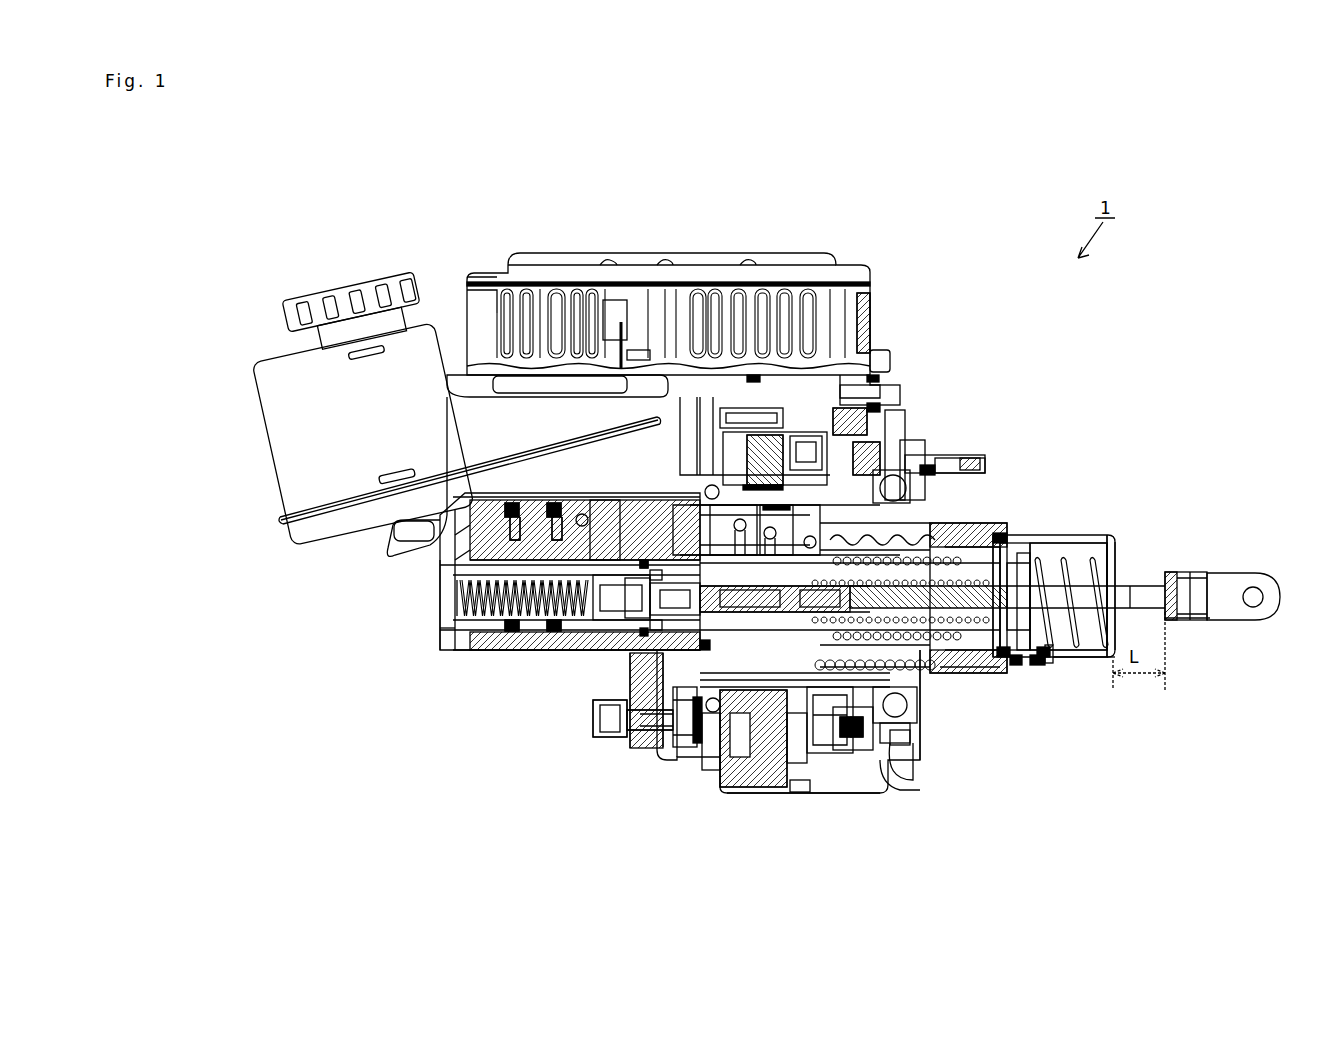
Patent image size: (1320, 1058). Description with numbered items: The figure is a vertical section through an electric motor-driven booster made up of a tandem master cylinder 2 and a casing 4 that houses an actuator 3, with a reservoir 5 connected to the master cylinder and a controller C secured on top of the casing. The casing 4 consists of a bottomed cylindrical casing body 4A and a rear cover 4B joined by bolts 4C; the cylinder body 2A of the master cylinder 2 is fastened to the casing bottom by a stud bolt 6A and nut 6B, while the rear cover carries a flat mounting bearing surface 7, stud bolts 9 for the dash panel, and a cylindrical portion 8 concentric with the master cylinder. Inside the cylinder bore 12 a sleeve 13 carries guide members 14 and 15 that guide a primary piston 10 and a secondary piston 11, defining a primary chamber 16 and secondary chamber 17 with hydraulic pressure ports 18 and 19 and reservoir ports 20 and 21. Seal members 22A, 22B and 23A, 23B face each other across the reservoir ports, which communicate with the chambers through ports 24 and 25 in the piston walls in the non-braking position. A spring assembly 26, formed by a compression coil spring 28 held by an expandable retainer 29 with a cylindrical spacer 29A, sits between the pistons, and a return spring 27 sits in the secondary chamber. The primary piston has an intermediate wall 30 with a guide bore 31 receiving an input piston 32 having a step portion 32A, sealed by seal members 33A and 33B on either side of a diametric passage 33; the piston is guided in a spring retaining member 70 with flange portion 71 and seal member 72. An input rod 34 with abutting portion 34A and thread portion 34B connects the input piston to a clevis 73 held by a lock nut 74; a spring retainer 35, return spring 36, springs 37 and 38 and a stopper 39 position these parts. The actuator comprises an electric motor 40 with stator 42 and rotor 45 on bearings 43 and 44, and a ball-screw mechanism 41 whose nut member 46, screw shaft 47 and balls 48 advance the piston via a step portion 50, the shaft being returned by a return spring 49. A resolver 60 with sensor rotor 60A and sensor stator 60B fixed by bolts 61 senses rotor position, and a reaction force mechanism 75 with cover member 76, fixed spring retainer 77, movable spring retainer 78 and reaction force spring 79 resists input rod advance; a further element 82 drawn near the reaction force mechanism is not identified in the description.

The tandem master cylinder 2 is at (426, 655).
The cylinder body 2A is at (460, 540).
The actuator 3 is at (915, 450).
The casing 4 is at (812, 814).
The casing body 4A is at (668, 762).
The rear cover 4B is at (900, 790).
The bolts 4C is at (880, 480).
The reservoir 5 is at (283, 378).
The stud bolt 6A is at (655, 735).
The nut 6B is at (615, 740).
The mounting bearing surface 7 is at (930, 460).
The cylindrical portion 8 is at (1045, 540).
The stud bolts 9 is at (920, 530).
The primary piston 10 is at (915, 695).
The secondary piston 11 is at (575, 645).
The cylinder bore 12 is at (465, 645).
The sleeve 13 is at (625, 650).
The guide member 14 is at (492, 640).
The guide member 15 is at (672, 725).
The primary chamber 16 is at (602, 645).
The secondary chamber 17 is at (457, 537).
The hydraulic pressure port 18 is at (508, 500).
The hydraulic pressure port 19 is at (461, 527).
The reservoir port 20 is at (606, 515).
The reservoir port 21 is at (452, 455).
The seal member 22A is at (645, 655).
The seal member 22B is at (715, 775).
The seal member 23A is at (515, 640).
The seal member 23B is at (550, 640).
The port 24 is at (628, 745).
The port 25 is at (450, 660).
The spring assembly 26 is at (552, 505).
The return spring 27 is at (440, 628).
The compression coil spring 28 is at (518, 525).
The retainer 29 is at (560, 530).
The cylindrical spacer 29A is at (708, 745).
The intermediate wall 30 is at (790, 782).
The guide bore 31 is at (918, 690).
The input piston 32 is at (920, 560).
The step portion 32A is at (852, 330).
The passage 33 is at (750, 290).
The seal member 33A is at (731, 300).
The seal member 33B is at (802, 300).
The input rod 34 is at (1145, 590).
The abutting portion 34A is at (1020, 540).
The thread portion 34B is at (1190, 575).
The spring retainer 35 is at (1040, 575).
The return spring 36 is at (958, 690).
The spring 37 is at (900, 450).
The spring 38 is at (1003, 535).
The stopper 39 is at (1012, 668).
The electric motor 40 is at (842, 770).
The ball-screw mechanism 41 is at (965, 465).
The stator 42 is at (755, 790).
The bearing 43 is at (705, 715).
The bearing 44 is at (908, 750).
The rotor 45 is at (870, 440).
The nut member 46 is at (908, 725).
The screw shaft 47 is at (975, 668).
The balls 48 is at (935, 465).
The return spring 49 is at (690, 560).
The step portion 50 is at (890, 600).
The resolver 60 is at (852, 840).
The sensor rotor 60A is at (850, 760).
The sensor stator 60B is at (870, 760).
The bolts 61 is at (882, 360).
The spring retaining member 70 is at (710, 430).
The flange portion 71 is at (642, 562).
The seal member 72 is at (770, 440).
The clevis 73 is at (1235, 600).
The lock nut 74 is at (1185, 615).
The reaction force mechanism 75 is at (1125, 553).
The cover member 76 is at (1116, 536).
The fixed spring retainer 77 is at (1036, 665).
The movable spring retainer 78 is at (1112, 657).
The reaction force spring 79 is at (1085, 658).
The seal 82 is at (1050, 665).
The controller C is at (782, 244).